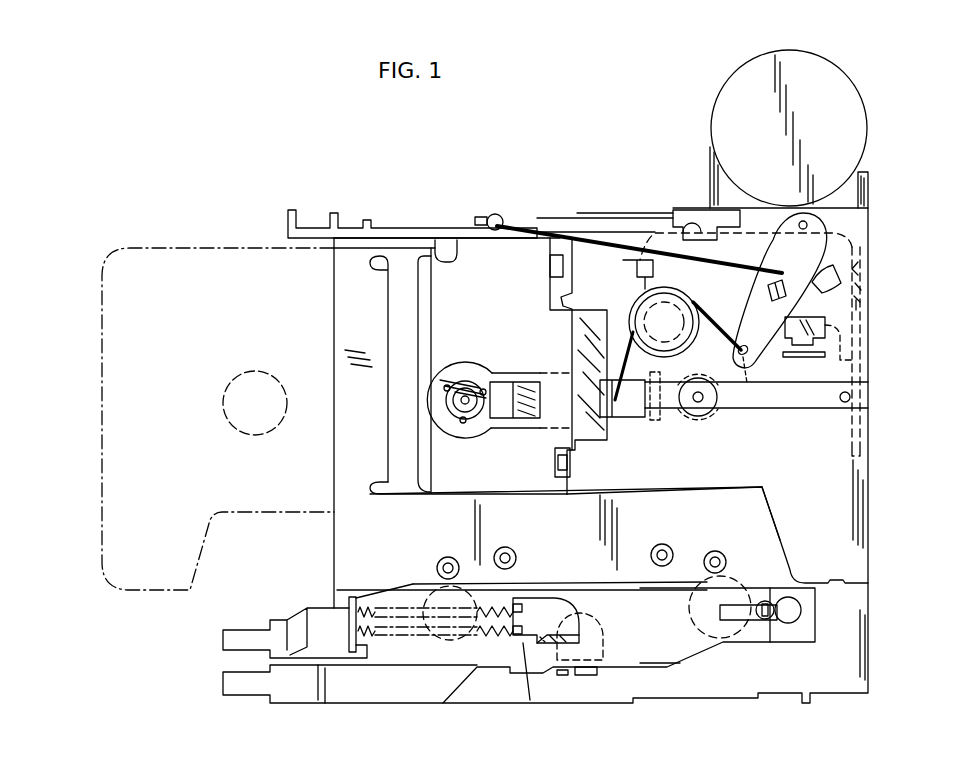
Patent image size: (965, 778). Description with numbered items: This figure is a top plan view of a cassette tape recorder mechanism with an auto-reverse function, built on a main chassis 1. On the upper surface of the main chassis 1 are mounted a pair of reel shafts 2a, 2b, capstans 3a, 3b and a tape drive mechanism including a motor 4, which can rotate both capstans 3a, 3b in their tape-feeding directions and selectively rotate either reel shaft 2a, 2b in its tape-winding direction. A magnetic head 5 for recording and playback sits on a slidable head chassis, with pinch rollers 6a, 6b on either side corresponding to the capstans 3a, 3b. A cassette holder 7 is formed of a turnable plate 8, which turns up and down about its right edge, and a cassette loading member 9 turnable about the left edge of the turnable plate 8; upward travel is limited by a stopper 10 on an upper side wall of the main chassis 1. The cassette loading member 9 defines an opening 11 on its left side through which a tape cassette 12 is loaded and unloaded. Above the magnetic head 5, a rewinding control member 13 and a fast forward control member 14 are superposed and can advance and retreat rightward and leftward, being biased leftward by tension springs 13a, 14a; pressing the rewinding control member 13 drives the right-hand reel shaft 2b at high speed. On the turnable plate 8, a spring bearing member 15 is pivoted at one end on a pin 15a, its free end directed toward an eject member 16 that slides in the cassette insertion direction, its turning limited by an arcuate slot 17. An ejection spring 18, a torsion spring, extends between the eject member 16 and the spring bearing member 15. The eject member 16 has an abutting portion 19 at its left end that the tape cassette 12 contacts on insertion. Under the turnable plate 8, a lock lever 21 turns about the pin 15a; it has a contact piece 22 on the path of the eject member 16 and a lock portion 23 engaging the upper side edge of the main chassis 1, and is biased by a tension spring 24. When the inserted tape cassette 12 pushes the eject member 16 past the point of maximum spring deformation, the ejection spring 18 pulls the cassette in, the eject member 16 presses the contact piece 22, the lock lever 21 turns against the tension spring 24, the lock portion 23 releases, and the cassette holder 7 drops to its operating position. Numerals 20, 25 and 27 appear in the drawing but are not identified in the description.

The main chassis 1 is at (334, 334).
The reel shaft 2a is at (465, 425).
The reel shaft 2b is at (706, 410).
The capstan 3a is at (448, 557).
The capstan 3b is at (717, 551).
The motor 4 is at (711, 124).
The magnetic head 5 is at (604, 641).
The pinch roller 6a is at (422, 598).
The pinch roller 6b is at (742, 588).
The cassette holder 7 is at (651, 497).
The turnable plate 8 is at (696, 489).
The cassette loading member 9 is at (556, 480).
The stopper 10 is at (457, 256).
The opening 11 is at (388, 356).
The tape cassette 12 is at (165, 248).
The rewinding control member 13 is at (223, 640).
The tension spring 13a is at (515, 606).
The fast forward control member 14 is at (223, 684).
The tension spring 14a is at (522, 631).
The spring bearing member 15 is at (750, 302).
The pin 15a is at (810, 226).
The eject member 16 is at (622, 428).
The arcuate slot 17 is at (829, 284).
The ejection spring 18 is at (631, 307).
The abutting portion 19 is at (656, 402).
The motor block 20 is at (500, 382).
The lock lever 21 is at (862, 335).
The contact piece 22 is at (848, 397).
The lock portion 23 is at (698, 218).
The tension spring 24 is at (864, 288).
The guide bar 25 is at (312, 228).
The arm 27 is at (506, 230).